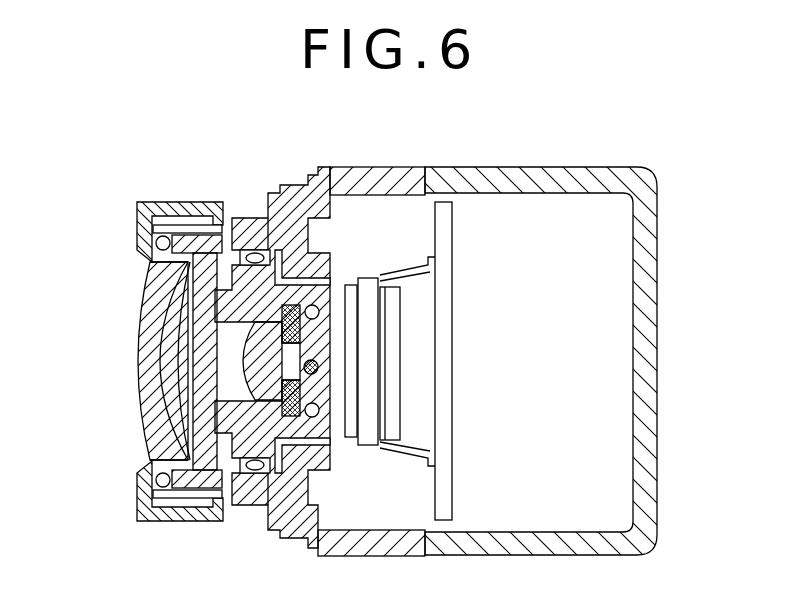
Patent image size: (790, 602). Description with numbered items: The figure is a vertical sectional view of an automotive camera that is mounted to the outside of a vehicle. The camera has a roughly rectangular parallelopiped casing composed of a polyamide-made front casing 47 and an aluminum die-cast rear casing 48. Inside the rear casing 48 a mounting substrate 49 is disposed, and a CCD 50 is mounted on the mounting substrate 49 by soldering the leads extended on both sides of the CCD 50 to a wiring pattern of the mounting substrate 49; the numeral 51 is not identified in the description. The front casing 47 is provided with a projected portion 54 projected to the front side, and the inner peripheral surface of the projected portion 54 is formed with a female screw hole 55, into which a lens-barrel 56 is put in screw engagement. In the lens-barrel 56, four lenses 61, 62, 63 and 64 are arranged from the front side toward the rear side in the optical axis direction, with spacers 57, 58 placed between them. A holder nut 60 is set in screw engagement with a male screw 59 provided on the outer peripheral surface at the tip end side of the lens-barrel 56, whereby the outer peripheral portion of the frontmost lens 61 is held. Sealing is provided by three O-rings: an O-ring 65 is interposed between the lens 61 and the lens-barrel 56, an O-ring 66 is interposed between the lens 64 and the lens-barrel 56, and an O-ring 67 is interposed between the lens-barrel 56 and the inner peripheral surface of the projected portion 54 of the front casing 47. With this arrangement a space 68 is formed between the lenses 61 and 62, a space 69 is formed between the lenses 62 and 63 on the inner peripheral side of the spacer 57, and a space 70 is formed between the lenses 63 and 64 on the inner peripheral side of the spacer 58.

The front casing 47 is at (373, 180).
The rear casing 48 is at (658, 281).
The mounting substrate 49 is at (440, 287).
The CCD 50 is at (363, 292).
The sensor holder 51 is at (410, 458).
The projected portion 54 is at (248, 492).
The female screw hole 55 is at (333, 440).
The lens-barrel 56 is at (198, 490).
The spacer 57 is at (152, 275).
The spacer 58 is at (288, 294).
The male screw 59 is at (183, 212).
The holder nut 60 is at (148, 510).
The lens 61 is at (150, 368).
The lens 62 is at (175, 402).
The lens 63 is at (162, 308).
The lens 64 is at (252, 350).
The O-ring 65 is at (156, 482).
The O-ring 66 is at (319, 408).
The O-ring 67 is at (254, 253).
The space 68 is at (160, 342).
The space 69 is at (185, 432).
The space 70 is at (318, 372).